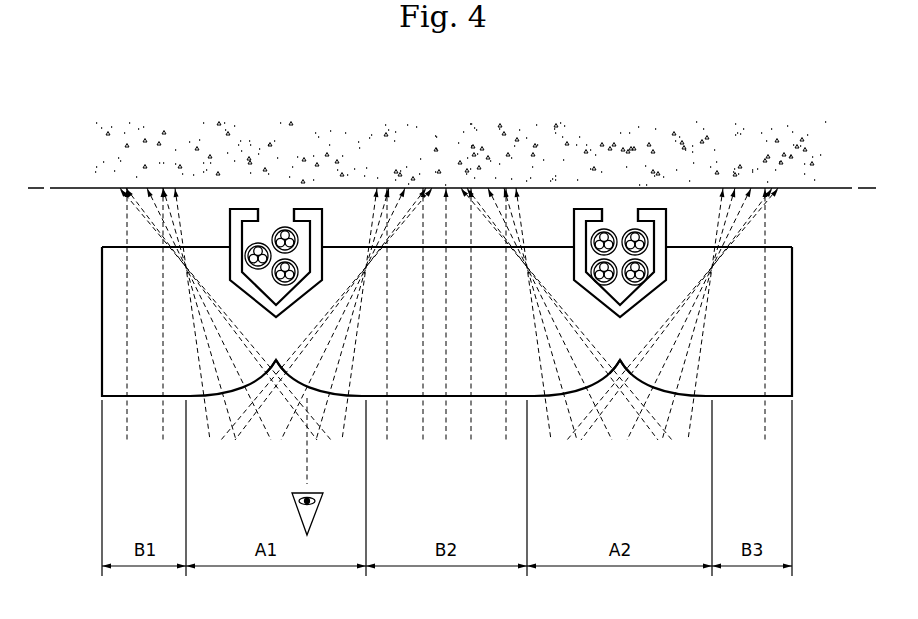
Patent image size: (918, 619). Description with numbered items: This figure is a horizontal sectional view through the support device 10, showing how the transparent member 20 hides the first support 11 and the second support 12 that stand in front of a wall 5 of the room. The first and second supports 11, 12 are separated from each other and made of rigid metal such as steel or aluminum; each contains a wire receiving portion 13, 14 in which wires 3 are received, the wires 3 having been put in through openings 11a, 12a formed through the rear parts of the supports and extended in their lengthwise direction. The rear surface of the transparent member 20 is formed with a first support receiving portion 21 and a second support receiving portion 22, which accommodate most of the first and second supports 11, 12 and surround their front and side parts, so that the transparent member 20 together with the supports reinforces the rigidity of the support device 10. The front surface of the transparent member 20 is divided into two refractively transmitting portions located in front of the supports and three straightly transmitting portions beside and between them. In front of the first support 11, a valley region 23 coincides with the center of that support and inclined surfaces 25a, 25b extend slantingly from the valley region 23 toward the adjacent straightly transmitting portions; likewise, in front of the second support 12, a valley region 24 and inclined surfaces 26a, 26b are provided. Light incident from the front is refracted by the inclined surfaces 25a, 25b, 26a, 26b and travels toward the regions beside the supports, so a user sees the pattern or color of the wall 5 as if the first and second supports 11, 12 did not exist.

The wires 3 is at (296, 242).
The wall 5 is at (98, 190).
The support device 10 is at (90, 366).
The first support 11 is at (258, 205).
The opening 11a is at (290, 210).
The second support 12 is at (602, 205).
The opening 12a is at (634, 210).
The wire receiving portion 13 is at (257, 237).
The wire receiving portion 14 is at (604, 227).
The transparent member 20 is at (418, 361).
The first support receiving portion 21 is at (237, 247).
The second support receiving portion 22 is at (581, 247).
The valley region 23 is at (267, 398).
The valley region 24 is at (610, 398).
The inclined surface 25a is at (233, 398).
The inclined surface 25b is at (318, 398).
The inclined surface 26a is at (575, 398).
The inclined surface 26b is at (661, 398).